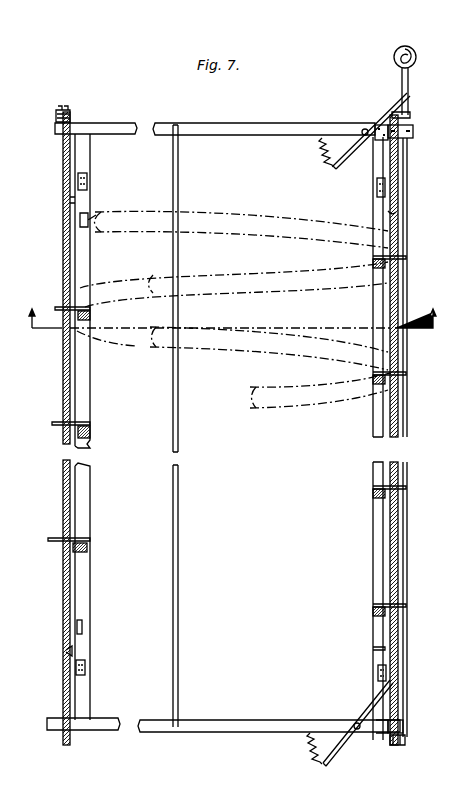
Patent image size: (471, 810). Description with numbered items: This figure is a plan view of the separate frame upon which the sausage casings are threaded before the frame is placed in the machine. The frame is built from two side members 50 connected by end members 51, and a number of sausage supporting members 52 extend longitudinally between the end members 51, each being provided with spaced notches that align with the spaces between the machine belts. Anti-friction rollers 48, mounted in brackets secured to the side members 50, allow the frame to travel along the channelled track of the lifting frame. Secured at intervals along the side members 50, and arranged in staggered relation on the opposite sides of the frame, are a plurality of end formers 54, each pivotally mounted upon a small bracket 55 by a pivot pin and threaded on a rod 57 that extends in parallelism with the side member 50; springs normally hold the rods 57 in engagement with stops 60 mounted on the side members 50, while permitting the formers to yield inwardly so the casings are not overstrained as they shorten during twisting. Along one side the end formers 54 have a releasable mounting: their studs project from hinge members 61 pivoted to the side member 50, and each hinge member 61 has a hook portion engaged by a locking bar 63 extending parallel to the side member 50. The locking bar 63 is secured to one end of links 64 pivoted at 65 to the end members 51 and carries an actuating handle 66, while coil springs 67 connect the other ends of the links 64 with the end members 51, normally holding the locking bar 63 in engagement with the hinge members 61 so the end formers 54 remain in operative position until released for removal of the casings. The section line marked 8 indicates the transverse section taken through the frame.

The section line 8- 8 is at (229, 322).
The anti-friction roller 48 is at (376, 190).
The side member 50 is at (85, 690).
The end member 51 is at (212, 131).
The sausage supporting member 52 is at (178, 573).
The end former 54 is at (398, 252).
The small bracket 55 is at (84, 549).
The rod 57 is at (66, 157).
The stop 60 is at (70, 650).
The hinge member 61 is at (414, 131).
The locking bar 63 is at (405, 298).
The link 64 is at (391, 113).
The pivot 65 is at (362, 129).
The actuating handle 66 is at (416, 48).
The coil spring 67 is at (320, 155).